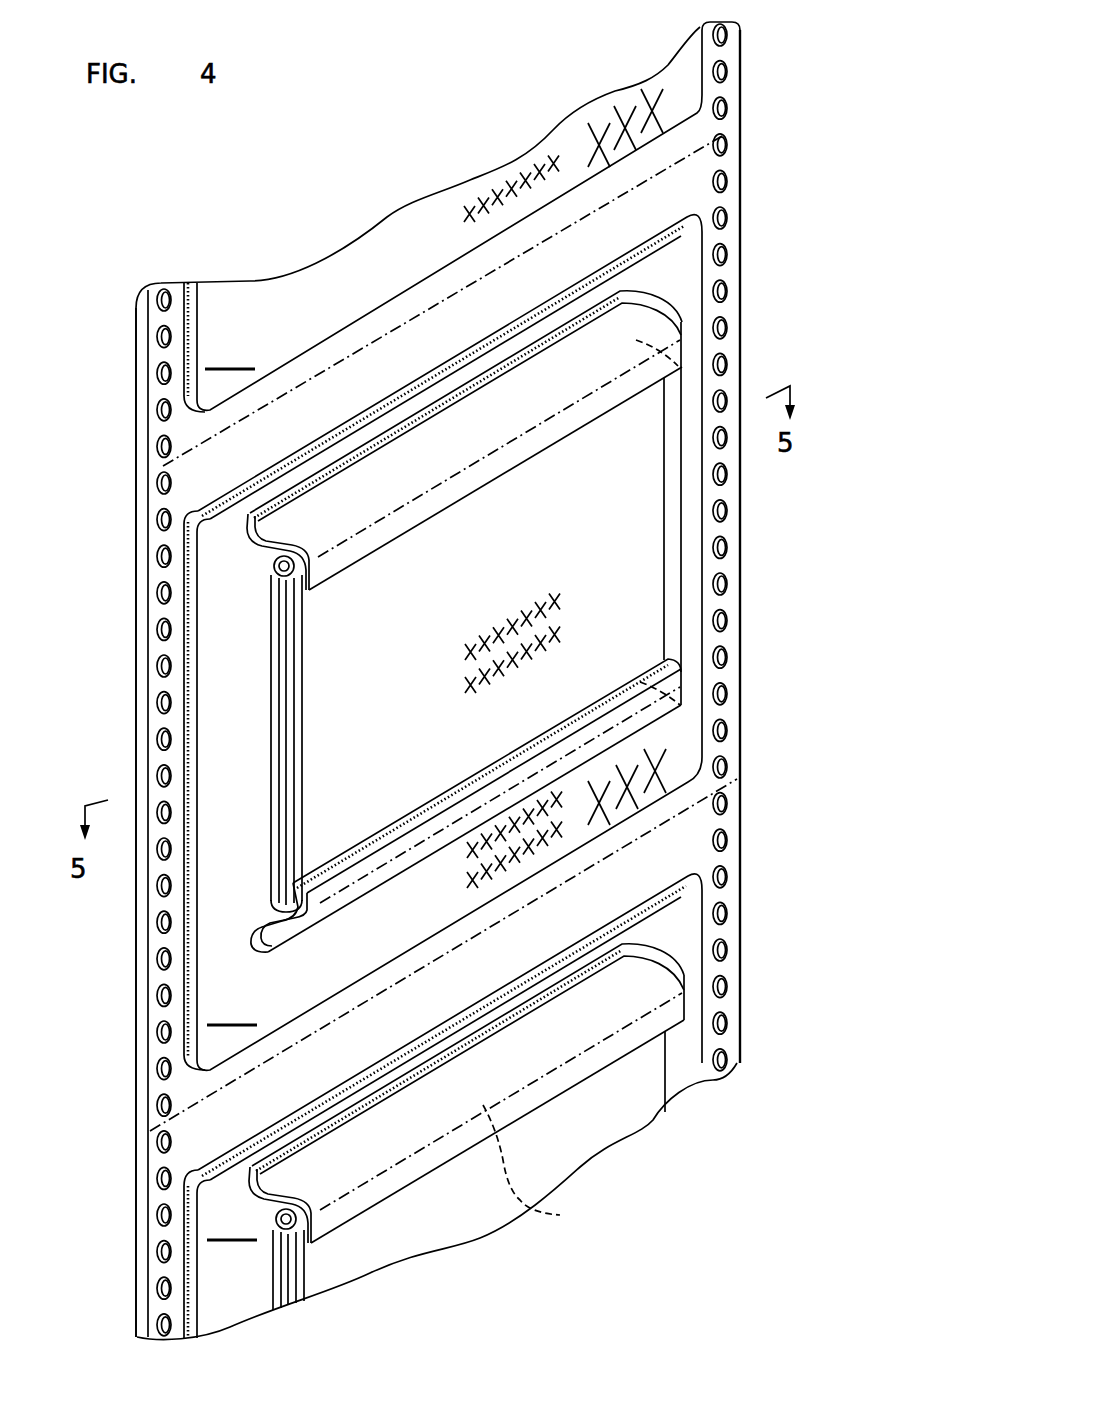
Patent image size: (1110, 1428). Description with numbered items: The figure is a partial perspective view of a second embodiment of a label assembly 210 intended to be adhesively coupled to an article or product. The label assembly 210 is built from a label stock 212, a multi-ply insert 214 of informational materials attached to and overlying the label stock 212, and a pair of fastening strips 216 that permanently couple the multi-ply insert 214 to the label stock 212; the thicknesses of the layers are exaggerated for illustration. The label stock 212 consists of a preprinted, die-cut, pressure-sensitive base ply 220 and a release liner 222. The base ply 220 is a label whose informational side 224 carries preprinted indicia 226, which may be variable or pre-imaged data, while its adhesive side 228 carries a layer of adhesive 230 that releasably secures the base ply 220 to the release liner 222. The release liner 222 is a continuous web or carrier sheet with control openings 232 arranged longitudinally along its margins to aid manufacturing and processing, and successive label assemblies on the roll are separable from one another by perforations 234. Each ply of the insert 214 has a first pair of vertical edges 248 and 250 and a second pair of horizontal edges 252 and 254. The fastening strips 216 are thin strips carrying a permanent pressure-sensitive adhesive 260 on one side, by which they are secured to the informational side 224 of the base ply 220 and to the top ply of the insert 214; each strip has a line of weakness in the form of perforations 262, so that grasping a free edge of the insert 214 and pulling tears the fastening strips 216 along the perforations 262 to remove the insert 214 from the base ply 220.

The label assembly 210 is at (295, 202).
The label stock 212 is at (712, 92).
The multi-ply insert 214 is at (259, 736).
The fastening strips 216 is at (367, 564).
The base ply 220 is at (495, 335).
The release liner 222 is at (740, 36).
The informational side 224 is at (231, 789).
The indicia 226 is at (560, 133).
The adhesive side 228 is at (140, 298).
The adhesive 230 is at (505, 330).
The control openings 232 is at (728, 147).
The perforations 234 is at (340, 355).
The vertical edge 248 is at (268, 678).
The vertical edge 250 is at (664, 522).
The horizontal edge 252 is at (270, 560).
The horizontal edge 254 is at (267, 905).
The pressure sensitive adhesive 260 is at (287, 575).
The perforations 262 is at (652, 345).